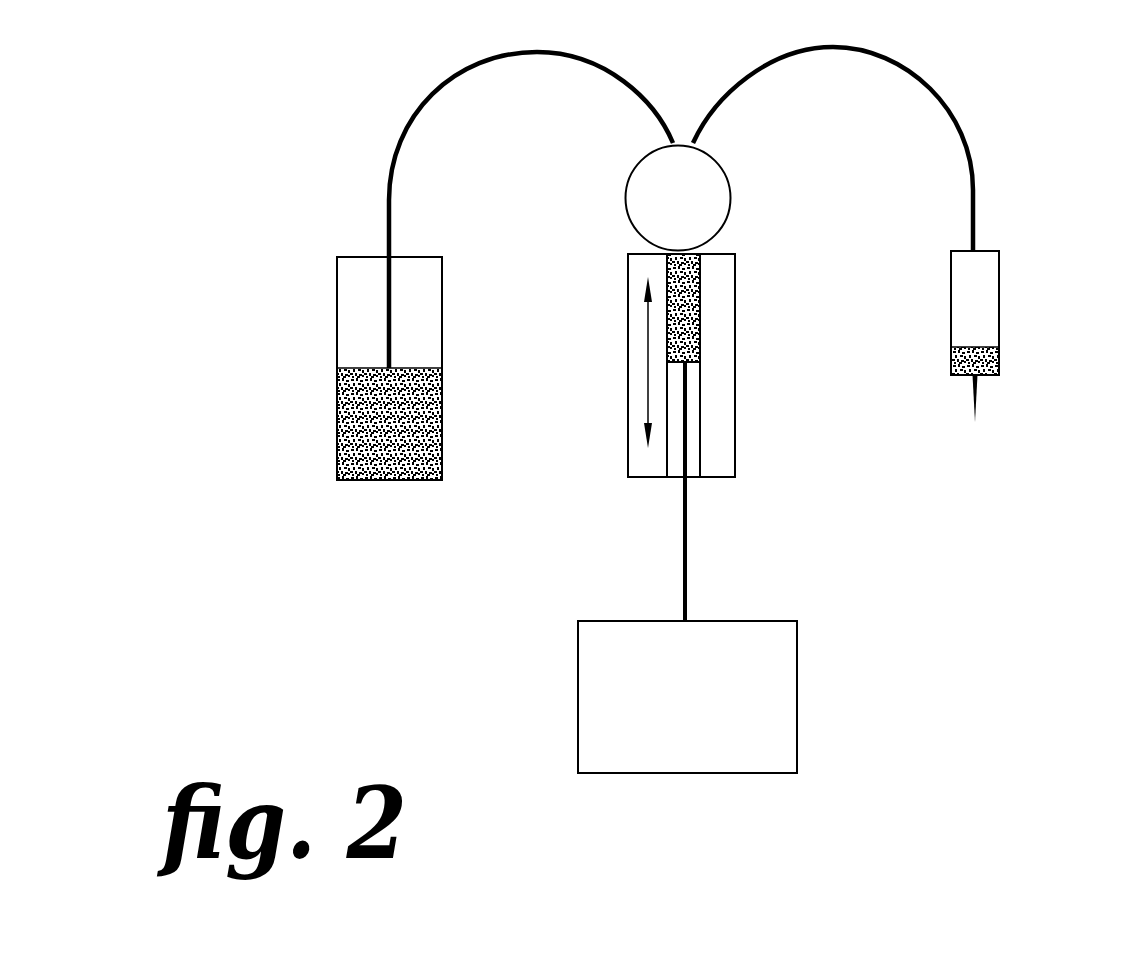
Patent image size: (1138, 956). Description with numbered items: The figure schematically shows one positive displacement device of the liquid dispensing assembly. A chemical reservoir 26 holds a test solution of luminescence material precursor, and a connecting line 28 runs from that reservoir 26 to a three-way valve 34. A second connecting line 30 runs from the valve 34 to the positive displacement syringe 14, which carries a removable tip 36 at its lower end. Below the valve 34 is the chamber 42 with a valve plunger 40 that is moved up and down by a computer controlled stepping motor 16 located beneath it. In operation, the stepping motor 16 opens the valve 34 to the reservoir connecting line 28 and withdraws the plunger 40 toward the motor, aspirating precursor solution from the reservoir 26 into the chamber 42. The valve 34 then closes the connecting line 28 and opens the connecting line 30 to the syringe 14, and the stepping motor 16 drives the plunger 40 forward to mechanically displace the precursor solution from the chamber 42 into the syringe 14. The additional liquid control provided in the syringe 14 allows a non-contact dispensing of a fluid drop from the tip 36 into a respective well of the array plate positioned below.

The positive displacement syringe 14 is at (1000, 308).
The stepping motor 16 is at (797, 668).
The chemical reservoir 26 is at (430, 403).
The connecting line 28 is at (585, 55).
The connecting line 30 is at (940, 100).
The three-way valve 34 is at (728, 172).
The removable tip 36 is at (977, 395).
The valve plunger 40 is at (697, 323).
The chamber 42 is at (972, 288).